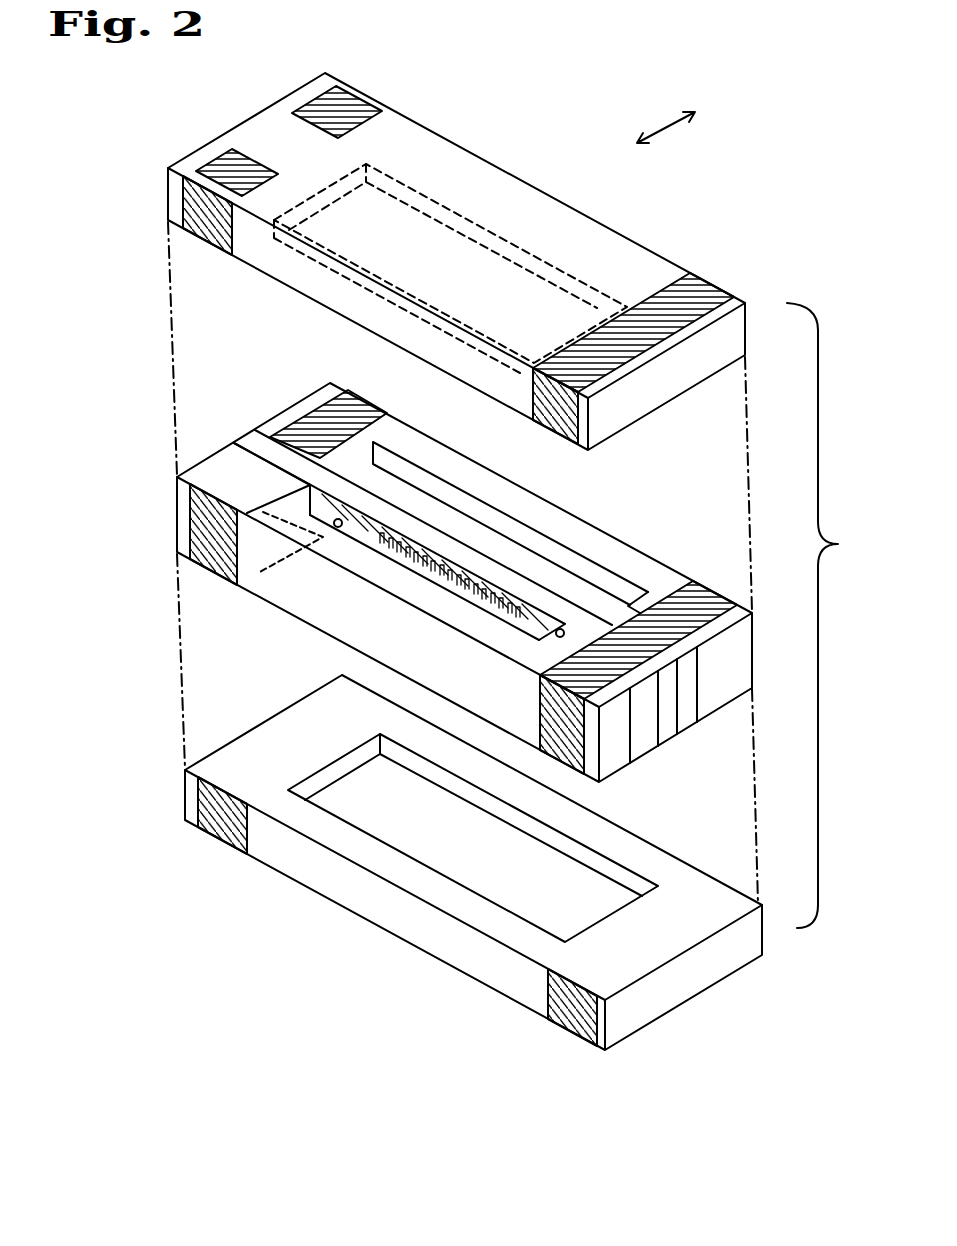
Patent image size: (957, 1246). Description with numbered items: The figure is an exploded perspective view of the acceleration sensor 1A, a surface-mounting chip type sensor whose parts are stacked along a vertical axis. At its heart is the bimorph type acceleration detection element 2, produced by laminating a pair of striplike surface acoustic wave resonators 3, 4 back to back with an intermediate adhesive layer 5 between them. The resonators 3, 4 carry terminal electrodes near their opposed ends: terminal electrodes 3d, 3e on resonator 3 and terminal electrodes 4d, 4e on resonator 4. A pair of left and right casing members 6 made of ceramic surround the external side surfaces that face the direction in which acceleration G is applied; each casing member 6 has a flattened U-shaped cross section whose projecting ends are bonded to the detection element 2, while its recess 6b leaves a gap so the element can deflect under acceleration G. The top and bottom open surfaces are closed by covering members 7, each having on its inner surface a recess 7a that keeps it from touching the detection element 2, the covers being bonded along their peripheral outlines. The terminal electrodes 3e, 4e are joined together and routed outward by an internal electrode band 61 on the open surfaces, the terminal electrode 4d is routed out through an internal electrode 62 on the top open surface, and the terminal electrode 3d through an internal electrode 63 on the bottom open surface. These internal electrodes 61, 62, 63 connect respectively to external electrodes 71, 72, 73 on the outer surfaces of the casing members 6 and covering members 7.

The acceleration sensor 1A is at (525, 575).
The acceleration G is at (666, 115).
The acceleration detection element 2 is at (458, 492).
The surface acoustic wave resonator 3 is at (403, 514).
The terminal electrode 3d is at (270, 458).
The terminal electrode 3e is at (625, 655).
The surface acoustic wave resonator 4 is at (475, 535).
The terminal electrode 4d is at (300, 410).
The terminal electrode 4e is at (693, 647).
The adhesive layer 5 is at (613, 587).
The casing member 6 is at (576, 522).
The recess 6b is at (630, 670).
The internal electrode band 61 is at (738, 592).
The internal electrode 62 is at (325, 410).
The internal electrode 63 is at (257, 575).
The covering member 7 is at (517, 195).
The recess 7a is at (427, 195).
The external electrode 71 is at (690, 293).
The external electrode 72 is at (310, 108).
The external electrode 73 is at (207, 168).